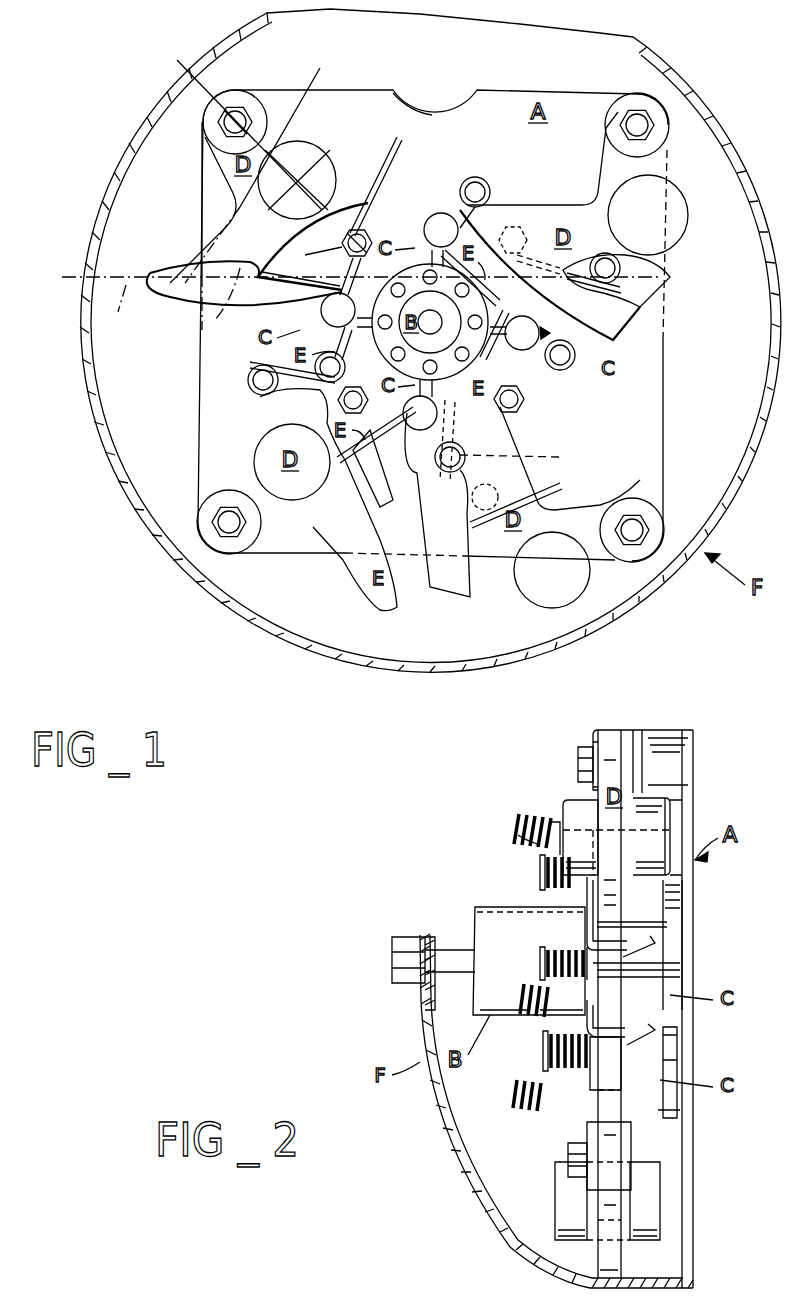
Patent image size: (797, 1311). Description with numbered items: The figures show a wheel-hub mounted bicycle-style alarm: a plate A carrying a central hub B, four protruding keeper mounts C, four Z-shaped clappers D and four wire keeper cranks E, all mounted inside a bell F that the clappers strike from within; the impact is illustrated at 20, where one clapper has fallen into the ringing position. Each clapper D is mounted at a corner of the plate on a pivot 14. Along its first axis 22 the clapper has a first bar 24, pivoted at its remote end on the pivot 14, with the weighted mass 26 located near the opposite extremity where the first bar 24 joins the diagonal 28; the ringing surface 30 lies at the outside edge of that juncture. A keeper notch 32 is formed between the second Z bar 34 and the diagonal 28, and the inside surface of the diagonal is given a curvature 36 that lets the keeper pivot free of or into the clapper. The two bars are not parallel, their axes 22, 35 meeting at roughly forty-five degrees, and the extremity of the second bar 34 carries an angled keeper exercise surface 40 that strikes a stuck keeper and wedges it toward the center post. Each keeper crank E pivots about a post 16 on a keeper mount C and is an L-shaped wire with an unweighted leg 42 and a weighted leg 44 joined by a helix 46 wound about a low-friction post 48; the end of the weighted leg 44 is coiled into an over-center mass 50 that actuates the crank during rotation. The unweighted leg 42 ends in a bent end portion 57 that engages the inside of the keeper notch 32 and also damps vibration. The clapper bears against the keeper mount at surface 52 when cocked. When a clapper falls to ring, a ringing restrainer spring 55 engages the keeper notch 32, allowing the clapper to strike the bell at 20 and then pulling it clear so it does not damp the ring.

In FIG. 1, the pivot 14 is at (225, 126).
In FIG. 2, the pivot 14 is at (585, 750).
In FIG. 1, the post 16 is at (427, 212).
In FIG. 2, the post 16 is at (558, 852).
In FIG. 1, the impact 20 is at (570, 652).
In FIG. 1, the first axis 22 is at (235, 62).
In FIG. 1, the first bar 24 is at (262, 167).
In FIG. 1, the weighted mass 26 is at (307, 150).
In FIG. 2, the weighted mass 26 is at (568, 800).
In FIG. 1, the diagonal 28 is at (230, 233).
In FIG. 1, the ringing surface 30 is at (413, 153).
In FIG. 1, the keeper notch 32 is at (188, 268).
In FIG. 1, the second Z bar 34 is at (222, 312).
In FIG. 1, the axis 35 is at (112, 309).
In FIG. 1, the curvature 36 is at (311, 258).
In FIG. 1, the keeper exercise surface 40 is at (313, 238).
In FIG. 1, the unweighted leg 42 is at (470, 385).
In FIG. 2, the unweighted leg 42 is at (575, 925).
In FIG. 1, the weighted leg 44 is at (478, 215).
In FIG. 2, the weighted leg 44 is at (535, 840).
In FIG. 2, the helix 46 is at (560, 890).
In FIG. 1, the post 48 is at (467, 225).
In FIG. 2, the post 48 is at (547, 872).
In FIG. 1, the over-center mass 50 is at (487, 178).
In FIG. 2, the over-center mass 50 is at (518, 835).
In FIG. 1, the surface 52 is at (255, 365).
In FIG. 1, the ringing restrainer spring 55 is at (397, 135).
In FIG. 2, the ringing restrainer spring 55 is at (650, 925).
In FIG. 2, the bent end portion 57 is at (640, 960).